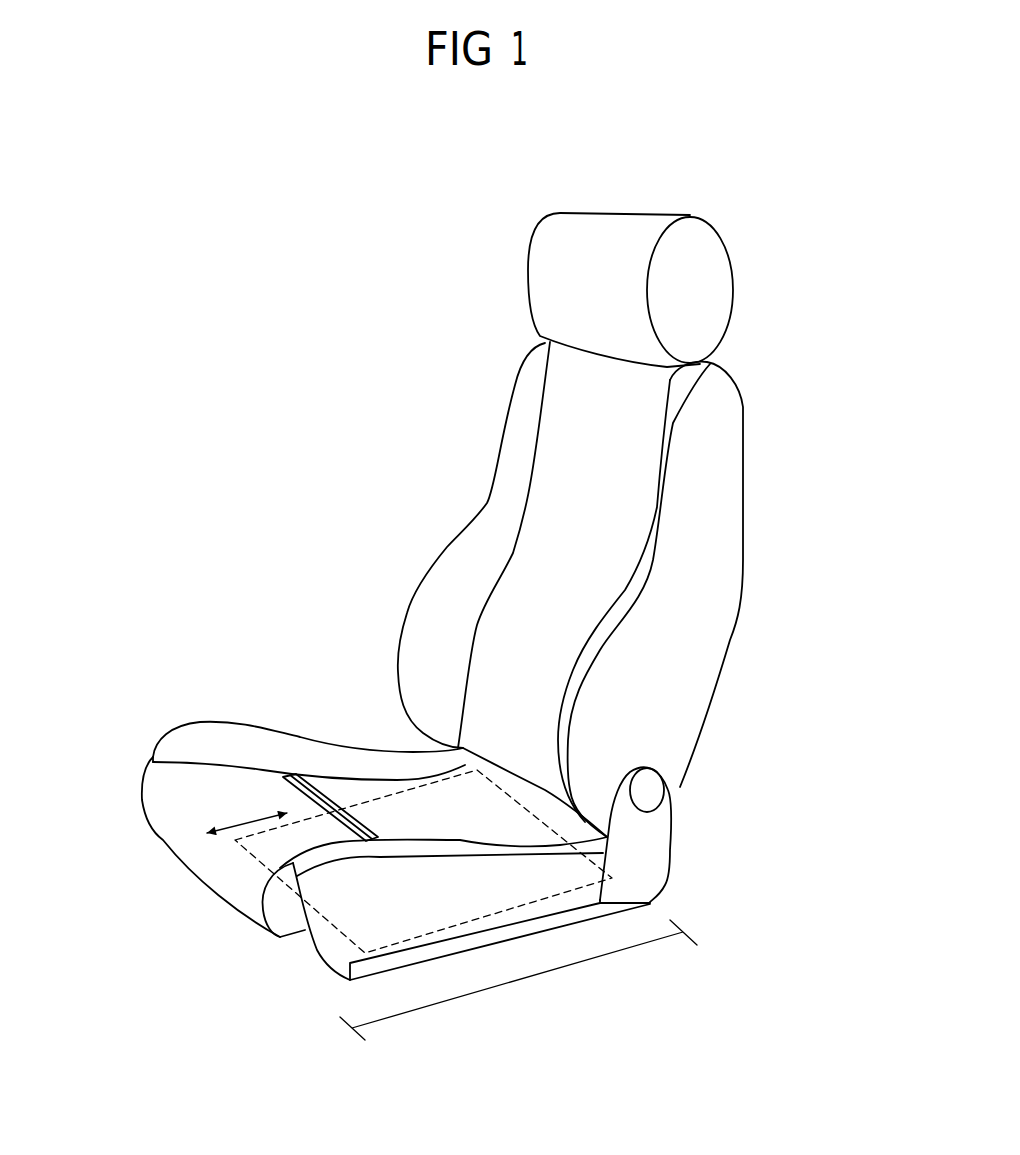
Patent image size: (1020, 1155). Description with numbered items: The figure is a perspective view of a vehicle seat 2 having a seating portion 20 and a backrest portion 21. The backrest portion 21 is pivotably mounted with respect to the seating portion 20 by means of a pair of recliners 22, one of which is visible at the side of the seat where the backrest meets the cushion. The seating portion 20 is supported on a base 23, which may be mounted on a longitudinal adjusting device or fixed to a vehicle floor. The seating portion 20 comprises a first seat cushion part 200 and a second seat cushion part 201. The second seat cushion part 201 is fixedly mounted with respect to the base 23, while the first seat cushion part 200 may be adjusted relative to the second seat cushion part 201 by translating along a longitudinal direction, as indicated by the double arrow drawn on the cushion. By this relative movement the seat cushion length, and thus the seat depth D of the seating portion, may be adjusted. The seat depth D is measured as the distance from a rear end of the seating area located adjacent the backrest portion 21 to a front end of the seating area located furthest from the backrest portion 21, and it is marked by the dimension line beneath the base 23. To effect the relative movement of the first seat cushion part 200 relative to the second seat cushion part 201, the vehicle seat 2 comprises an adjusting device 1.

The adjusting device 1 is at (141, 747).
The vehicle seat 2 is at (250, 405).
The seating portion 20 is at (312, 723).
The first seat cushion part 200 is at (250, 887).
The second seat cushion part 201 is at (413, 800).
The backrest portion 21 is at (438, 499).
The recliners 22 is at (645, 795).
The base 23 is at (650, 900).
The seat depth D is at (518, 980).